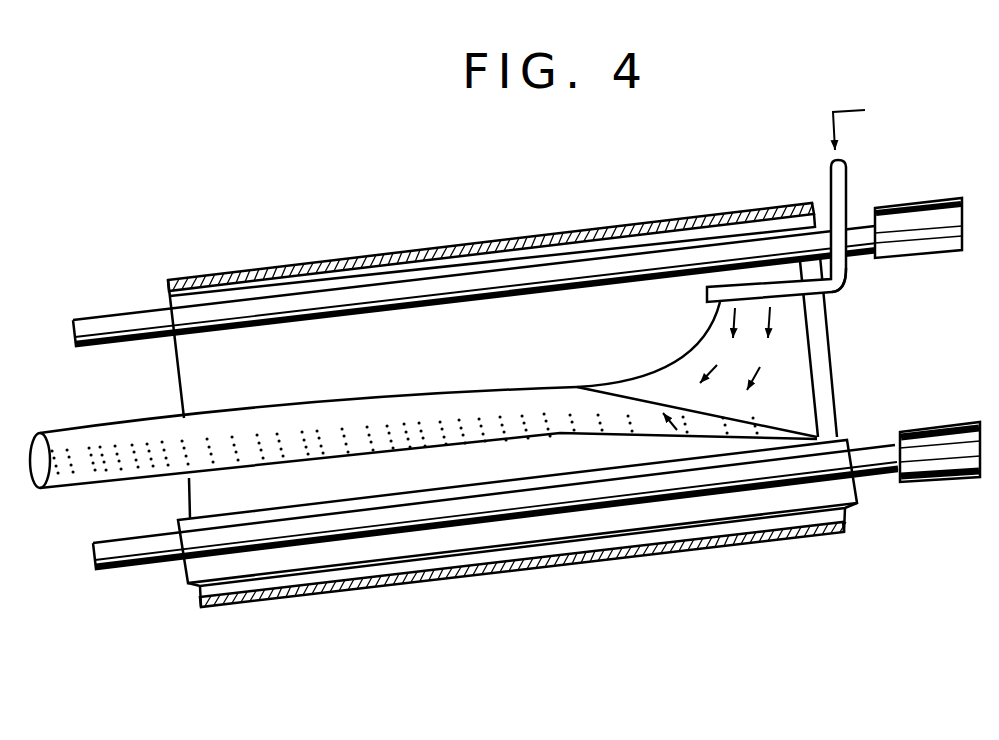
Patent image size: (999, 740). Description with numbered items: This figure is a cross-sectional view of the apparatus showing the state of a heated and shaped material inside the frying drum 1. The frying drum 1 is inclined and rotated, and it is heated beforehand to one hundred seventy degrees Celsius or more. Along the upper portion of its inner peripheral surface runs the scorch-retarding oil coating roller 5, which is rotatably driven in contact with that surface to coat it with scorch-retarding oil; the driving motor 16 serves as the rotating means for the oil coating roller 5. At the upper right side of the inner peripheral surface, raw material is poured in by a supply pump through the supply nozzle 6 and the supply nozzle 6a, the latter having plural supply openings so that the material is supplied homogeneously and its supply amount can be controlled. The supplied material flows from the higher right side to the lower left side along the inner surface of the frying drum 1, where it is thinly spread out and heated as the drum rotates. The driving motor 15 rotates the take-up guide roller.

The frying drum 1 is at (480, 574).
The scorch-retarding oil coating roller 5 is at (457, 278).
The supply nozzle 6 is at (829, 176).
The supply nozzle 6a is at (841, 293).
The driving motor 15 is at (930, 484).
The driving motor 16 is at (930, 210).